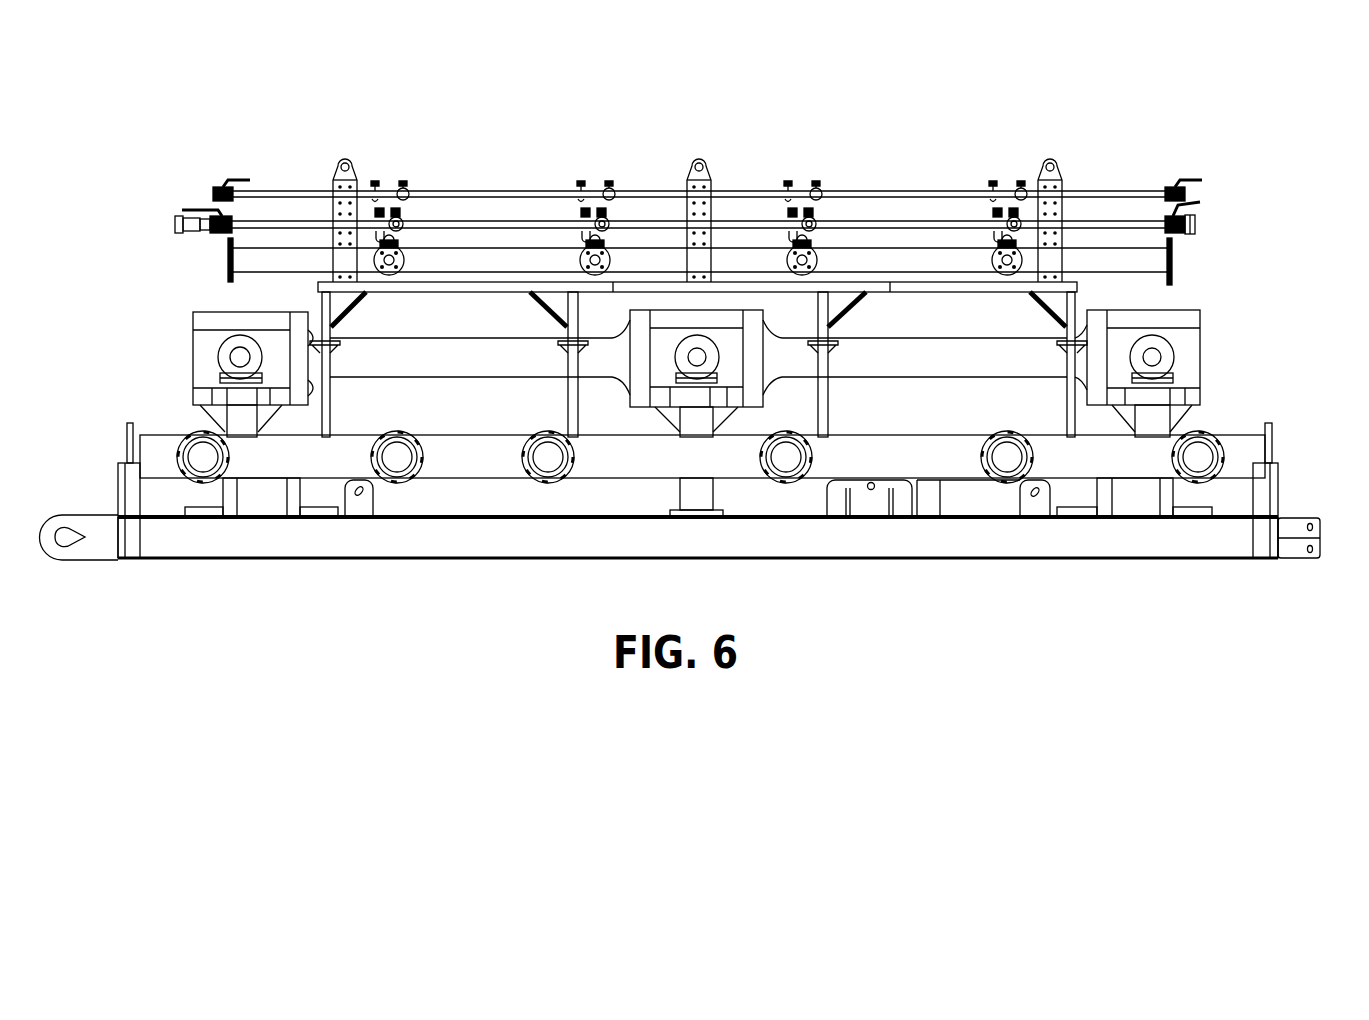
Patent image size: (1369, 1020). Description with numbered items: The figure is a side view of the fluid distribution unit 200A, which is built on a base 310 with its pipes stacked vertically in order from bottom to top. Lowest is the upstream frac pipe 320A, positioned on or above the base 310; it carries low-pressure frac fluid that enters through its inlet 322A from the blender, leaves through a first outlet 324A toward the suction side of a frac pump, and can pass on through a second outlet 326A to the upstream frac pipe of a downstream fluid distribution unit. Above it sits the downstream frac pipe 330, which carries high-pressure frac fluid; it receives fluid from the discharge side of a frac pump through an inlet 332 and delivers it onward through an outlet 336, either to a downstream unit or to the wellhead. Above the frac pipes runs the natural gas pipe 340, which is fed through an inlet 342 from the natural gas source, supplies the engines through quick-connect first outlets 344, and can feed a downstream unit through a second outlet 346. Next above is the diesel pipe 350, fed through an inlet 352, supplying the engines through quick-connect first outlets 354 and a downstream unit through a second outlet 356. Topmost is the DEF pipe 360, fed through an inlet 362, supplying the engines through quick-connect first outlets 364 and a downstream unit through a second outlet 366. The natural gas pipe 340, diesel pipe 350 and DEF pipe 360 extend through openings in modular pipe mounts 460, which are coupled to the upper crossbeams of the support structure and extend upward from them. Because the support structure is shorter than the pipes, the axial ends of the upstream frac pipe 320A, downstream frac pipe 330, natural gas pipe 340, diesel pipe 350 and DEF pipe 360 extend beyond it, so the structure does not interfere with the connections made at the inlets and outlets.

The fluid distribution unit 200A is at (703, 341).
The modular pipe mount 460 is at (327, 161).
The second outlet of DEF pipe 366 is at (212, 193).
The second outlet of diesel pipe 356 is at (176, 223).
The second outlet of natural gas pipe 346 is at (226, 258).
The DEF pipe 360 is at (552, 195).
The diesel pipe 350 is at (498, 225).
The natural gas pipe 340 is at (453, 258).
The first outlet of natural gas pipe 344 is at (982, 260).
The first outlet of diesel pipe 354 is at (998, 214).
The first outlet of DEF pipe 364 is at (993, 180).
The inlet of DEF pipe 362 is at (1193, 188).
The inlet of diesel pipe 352 is at (1198, 224).
The inlet of natural gas pipe 342 is at (1176, 262).
The downstream frac pipe 330 is at (486, 352).
The outlet of downstream frac pipe 336 is at (193, 356).
The inlet of downstream frac pipe 332 is at (1173, 358).
The first outlet of upstream frac pipe 324A is at (1005, 432).
The second outlet of upstream frac pipe 326A is at (125, 450).
The inlet of upstream frac pipe 322A is at (1273, 447).
The upstream frac pipe 320A is at (702, 495).
The base 310 is at (680, 562).